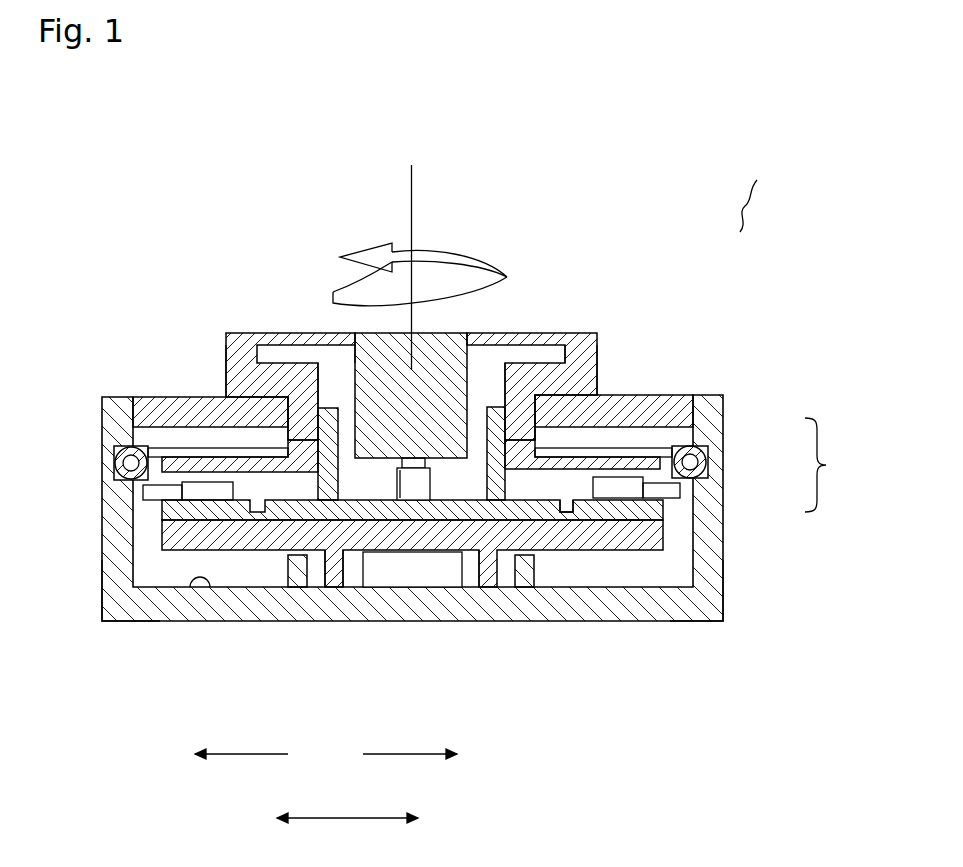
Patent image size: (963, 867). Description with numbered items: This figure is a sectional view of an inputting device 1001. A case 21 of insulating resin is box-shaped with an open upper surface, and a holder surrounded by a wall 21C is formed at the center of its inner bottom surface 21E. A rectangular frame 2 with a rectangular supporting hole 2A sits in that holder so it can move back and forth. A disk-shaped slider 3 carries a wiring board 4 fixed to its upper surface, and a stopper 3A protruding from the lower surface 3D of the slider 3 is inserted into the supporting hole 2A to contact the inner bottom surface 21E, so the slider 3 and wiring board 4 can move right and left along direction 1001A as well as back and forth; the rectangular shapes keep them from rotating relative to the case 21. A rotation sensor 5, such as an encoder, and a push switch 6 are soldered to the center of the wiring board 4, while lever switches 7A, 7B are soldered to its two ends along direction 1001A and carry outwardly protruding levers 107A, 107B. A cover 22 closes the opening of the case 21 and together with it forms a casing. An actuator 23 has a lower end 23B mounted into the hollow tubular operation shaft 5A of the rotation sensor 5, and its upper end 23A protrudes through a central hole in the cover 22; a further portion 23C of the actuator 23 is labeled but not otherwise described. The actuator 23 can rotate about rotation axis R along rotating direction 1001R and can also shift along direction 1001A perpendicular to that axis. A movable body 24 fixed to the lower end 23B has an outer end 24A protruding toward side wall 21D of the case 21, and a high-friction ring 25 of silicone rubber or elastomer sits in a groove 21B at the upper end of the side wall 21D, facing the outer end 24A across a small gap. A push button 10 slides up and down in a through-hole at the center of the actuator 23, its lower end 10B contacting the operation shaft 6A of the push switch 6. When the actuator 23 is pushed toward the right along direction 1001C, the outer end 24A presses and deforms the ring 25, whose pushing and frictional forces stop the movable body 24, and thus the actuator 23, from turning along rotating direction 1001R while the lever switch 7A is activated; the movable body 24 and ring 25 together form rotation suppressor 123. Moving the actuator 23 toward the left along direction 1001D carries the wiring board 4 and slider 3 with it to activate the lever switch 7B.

The inputting device 1001 is at (765, 192).
The rotating direction 1001R is at (443, 257).
The direction 1001A is at (360, 818).
The direction 1001C is at (415, 754).
The direction 1001D is at (255, 754).
The rotation axis R is at (410, 205).
The push button 10 is at (508, 333).
The lower end 10B is at (432, 447).
The frame 2 is at (315, 556).
The supporting hole 2A is at (334, 570).
The slider 3 is at (560, 522).
The stopper 3A is at (488, 556).
The lower surface 3D is at (588, 548).
The wiring board 4 is at (622, 530).
The rotation sensor 5 is at (520, 427).
The operation shaft 5A is at (563, 363).
The push switch 6 is at (398, 470).
The operation shaft 6A is at (413, 488).
The lever switch 7A is at (620, 487).
The lever switch 7B is at (205, 488).
The lever 107A is at (655, 481).
The lever 107B is at (155, 490).
The case 21 is at (690, 605).
The groove 21B is at (114, 465).
The wall 21C is at (298, 580).
The side wall 21D is at (112, 577).
The inner bottom surface 21E is at (197, 590).
The cover 22 is at (157, 410).
The actuator 23 is at (237, 335).
The upper end 23A is at (248, 350).
The lower end 23B is at (303, 435).
The cover recess 23C is at (340, 390).
The movable body 24 is at (702, 483).
The outer end 24A is at (665, 458).
The ring 25 is at (117, 452).
The rotation suppressor 123 is at (837, 465).